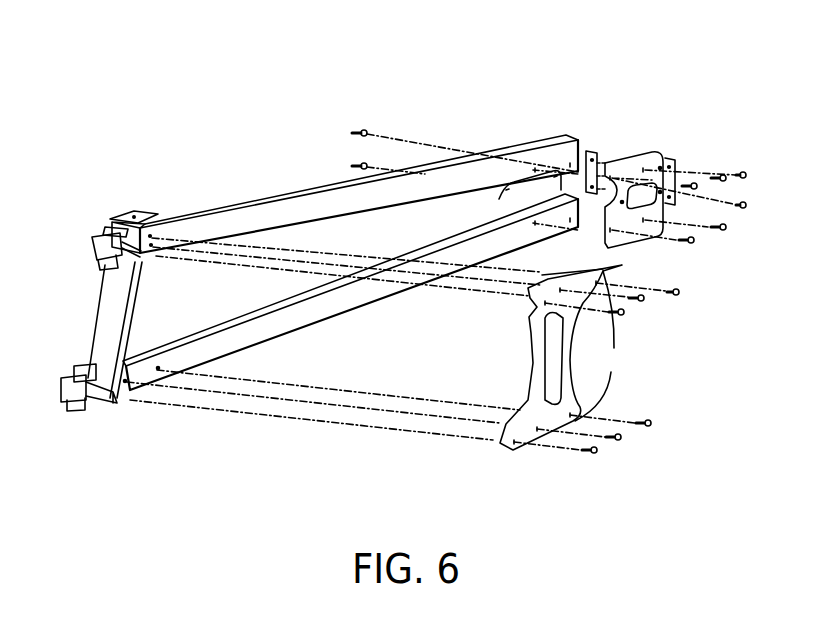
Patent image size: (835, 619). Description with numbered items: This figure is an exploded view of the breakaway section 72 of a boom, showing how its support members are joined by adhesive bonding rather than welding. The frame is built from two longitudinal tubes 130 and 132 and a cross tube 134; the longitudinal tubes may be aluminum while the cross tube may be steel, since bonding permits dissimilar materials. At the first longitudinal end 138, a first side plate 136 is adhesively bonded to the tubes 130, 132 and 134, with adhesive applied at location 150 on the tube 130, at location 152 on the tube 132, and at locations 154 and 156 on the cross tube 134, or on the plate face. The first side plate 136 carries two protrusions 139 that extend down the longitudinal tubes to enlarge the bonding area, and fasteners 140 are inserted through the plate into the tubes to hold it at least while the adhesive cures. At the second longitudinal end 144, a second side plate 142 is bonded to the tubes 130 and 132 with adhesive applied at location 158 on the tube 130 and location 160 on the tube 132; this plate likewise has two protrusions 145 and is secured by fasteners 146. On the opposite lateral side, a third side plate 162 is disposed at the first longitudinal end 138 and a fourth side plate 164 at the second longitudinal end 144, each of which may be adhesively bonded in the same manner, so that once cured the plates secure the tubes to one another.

The breakaway section 72 is at (165, 77).
The longitudinal tube 130 is at (287, 207).
The longitudinal tube 132 is at (352, 298).
The cross tube 134 is at (106, 307).
The first side plate 136 is at (521, 391).
The first longitudinal end 138 is at (224, 190).
The protrusions 139 is at (603, 346).
The fasteners 140 is at (598, 450).
The second side plate 142 is at (644, 153).
The second longitudinal end 144 is at (502, 126).
The protrusions 145 is at (613, 187).
The fasteners 146 is at (742, 172).
The location 150 is at (174, 228).
The location 152 is at (139, 400).
The location 154 is at (144, 265).
The location 156 is at (104, 370).
The location 158 is at (550, 151).
The location 160 is at (541, 239).
The third side plate 162 is at (133, 212).
The fourth side plate 164 is at (597, 149).